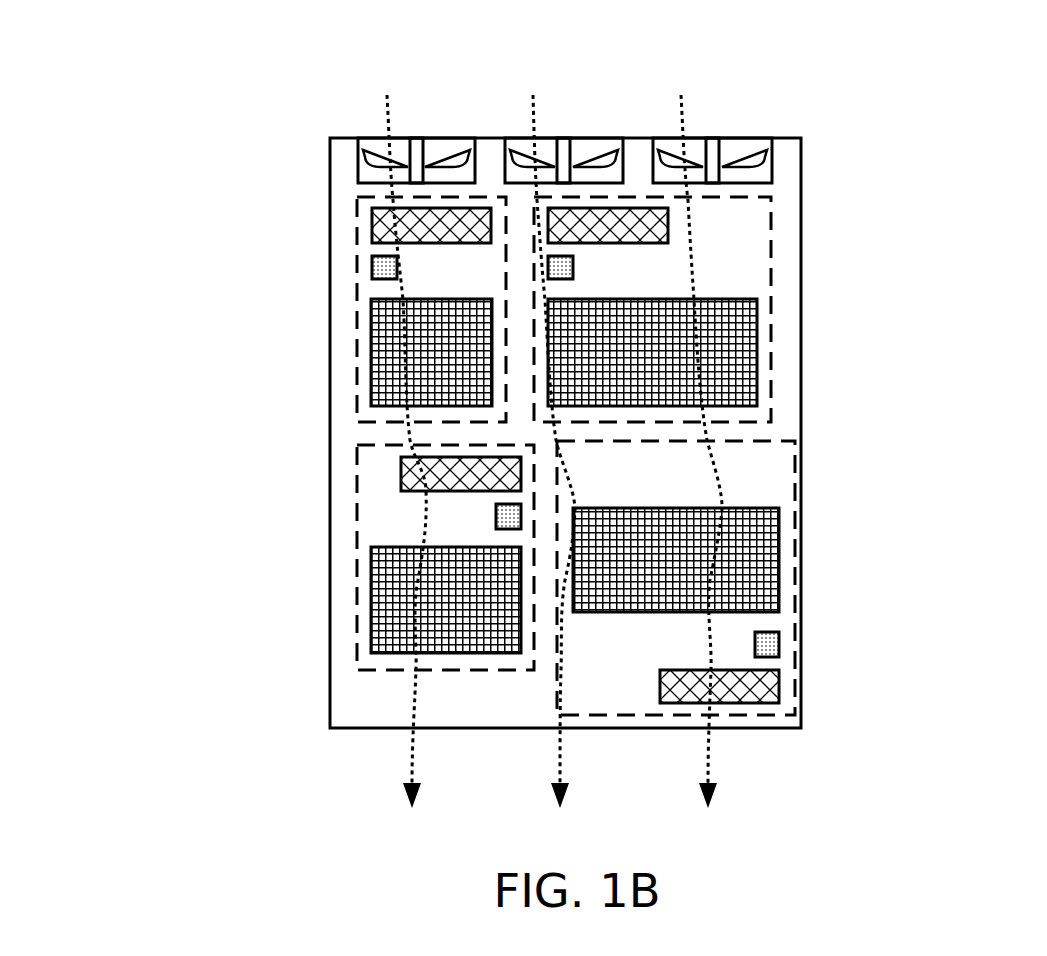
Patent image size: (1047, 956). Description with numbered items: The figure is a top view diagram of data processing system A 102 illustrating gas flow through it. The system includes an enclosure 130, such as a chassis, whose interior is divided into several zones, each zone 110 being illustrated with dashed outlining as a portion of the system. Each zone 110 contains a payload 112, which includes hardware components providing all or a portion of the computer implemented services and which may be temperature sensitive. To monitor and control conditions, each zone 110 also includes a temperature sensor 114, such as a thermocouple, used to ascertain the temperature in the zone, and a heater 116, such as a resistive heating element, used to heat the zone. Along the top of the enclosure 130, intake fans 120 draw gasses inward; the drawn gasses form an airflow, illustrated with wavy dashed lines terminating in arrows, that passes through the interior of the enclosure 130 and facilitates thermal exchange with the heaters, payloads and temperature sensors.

The data processing system A 102 is at (268, 150).
The zone 110 is at (795, 480).
The payload 112 is at (779, 543).
The temperature sensor 114 is at (702, 456).
The heater 116 is at (779, 682).
The intake fan 120 is at (572, 103).
The enclosure 130 is at (803, 197).